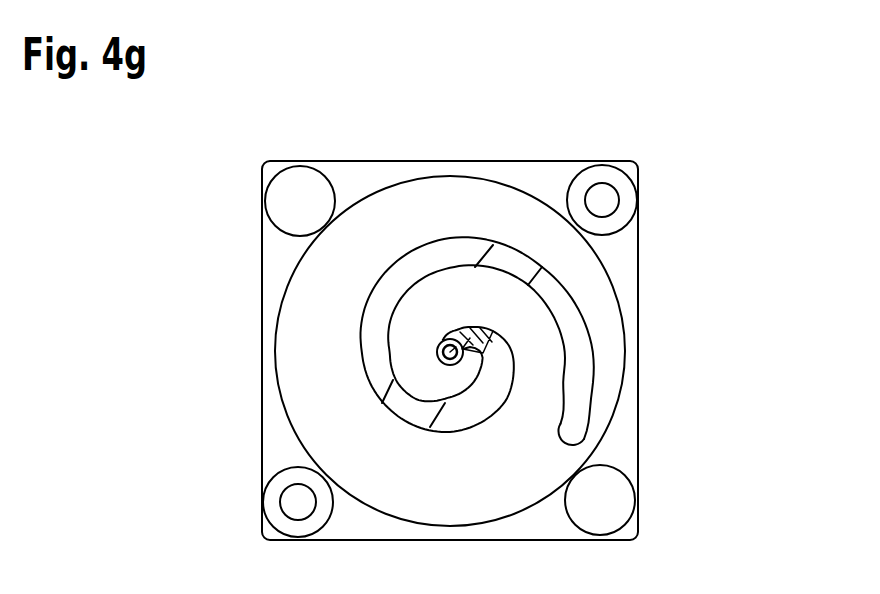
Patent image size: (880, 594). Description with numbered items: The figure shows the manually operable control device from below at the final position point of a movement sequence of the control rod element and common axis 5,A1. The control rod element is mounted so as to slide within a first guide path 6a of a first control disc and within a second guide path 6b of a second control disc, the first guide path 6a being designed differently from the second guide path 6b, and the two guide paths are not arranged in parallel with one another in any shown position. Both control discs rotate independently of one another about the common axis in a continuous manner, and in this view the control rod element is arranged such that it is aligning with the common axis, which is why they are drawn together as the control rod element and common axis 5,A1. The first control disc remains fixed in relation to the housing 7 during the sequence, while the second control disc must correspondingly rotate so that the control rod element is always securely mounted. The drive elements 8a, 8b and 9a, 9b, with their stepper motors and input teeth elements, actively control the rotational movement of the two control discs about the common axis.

The housing 7 is at (277, 267).
The drive element 8a is at (277, 207).
The drive element 8b is at (623, 508).
The drive element 9a is at (623, 207).
The drive element 9b is at (273, 507).
The first guide path 6a is at (403, 407).
The second guide path 6b is at (480, 393).
The control rod element and common axis 5,A1 is at (465, 331).